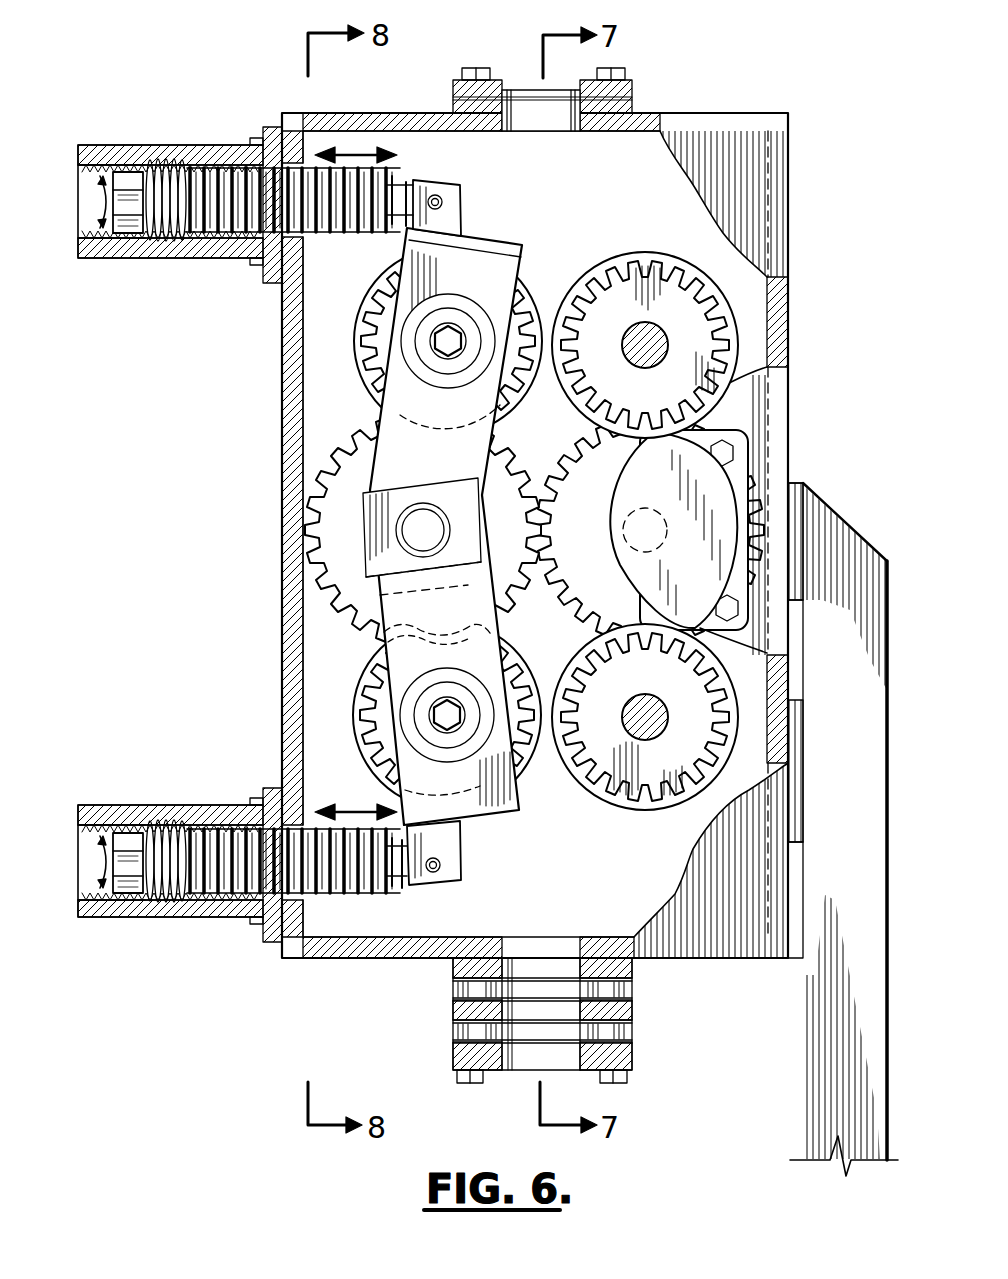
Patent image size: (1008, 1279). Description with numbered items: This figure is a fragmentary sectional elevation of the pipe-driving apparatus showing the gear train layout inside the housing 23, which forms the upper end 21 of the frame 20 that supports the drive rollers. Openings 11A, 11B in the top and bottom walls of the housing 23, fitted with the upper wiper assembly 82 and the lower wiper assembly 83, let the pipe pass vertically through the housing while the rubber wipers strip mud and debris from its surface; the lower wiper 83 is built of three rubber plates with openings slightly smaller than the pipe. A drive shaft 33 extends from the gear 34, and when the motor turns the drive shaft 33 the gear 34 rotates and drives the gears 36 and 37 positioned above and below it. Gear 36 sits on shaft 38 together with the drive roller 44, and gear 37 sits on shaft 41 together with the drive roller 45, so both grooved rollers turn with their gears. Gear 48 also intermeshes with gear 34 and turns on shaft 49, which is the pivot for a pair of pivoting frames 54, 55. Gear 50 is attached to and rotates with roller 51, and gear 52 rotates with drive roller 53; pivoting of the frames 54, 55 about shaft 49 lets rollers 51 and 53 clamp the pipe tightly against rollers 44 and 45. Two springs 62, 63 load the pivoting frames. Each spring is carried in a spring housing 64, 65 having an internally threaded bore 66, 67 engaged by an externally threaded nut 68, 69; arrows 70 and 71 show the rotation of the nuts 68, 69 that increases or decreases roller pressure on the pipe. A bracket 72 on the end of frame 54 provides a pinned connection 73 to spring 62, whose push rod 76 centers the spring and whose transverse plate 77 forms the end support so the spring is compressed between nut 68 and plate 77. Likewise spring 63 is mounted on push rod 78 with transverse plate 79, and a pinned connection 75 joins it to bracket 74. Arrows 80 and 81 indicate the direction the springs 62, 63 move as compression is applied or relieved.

The opening 11A is at (532, 76).
The opening 11B is at (547, 925).
The frame 20 is at (870, 985).
The upper end 21 is at (868, 722).
The housing 23 is at (392, 118).
The drive shaft 33 is at (627, 500).
The gear 34 is at (590, 432).
The gear 36 is at (644, 268).
The gear 37 is at (618, 806).
The shaft 38 is at (664, 340).
The shaft 41 is at (650, 740).
The drive roller 44 is at (600, 262).
The drive roller 45 is at (593, 802).
The gear 48 is at (320, 600).
The shaft 49 is at (412, 534).
The gear 50 is at (382, 302).
The roller 51 is at (380, 270).
The gear 52 is at (372, 742).
The drive roller 53 is at (365, 686).
The pivoting frame 54 is at (419, 526).
The pivoting frame 55 is at (385, 636).
The spring 62 is at (230, 168).
The spring 63 is at (226, 828).
The spring housing 64 is at (160, 258).
The spring housing 65 is at (152, 918).
The internally threaded bore 66 is at (92, 242).
The internally threaded bore 67 is at (86, 905).
The externally threaded nut 68 is at (152, 174).
The externally threaded nut 69 is at (160, 832).
The arrow 70 is at (100, 172).
The arrow 71 is at (122, 834).
The bracket 72 is at (462, 206).
The pinned connection 73 is at (442, 200).
The bracket 74 is at (461, 840).
The pinned connection 75 is at (441, 866).
The push rod 76 is at (414, 182).
The transverse plate 77 is at (400, 184).
The push rod 78 is at (406, 890).
The transverse plate 79 is at (396, 890).
The arrow 80 is at (352, 150).
The arrow 81 is at (358, 806).
The wiper assembly 82 is at (616, 106).
The wiper assembly 83 is at (633, 1014).